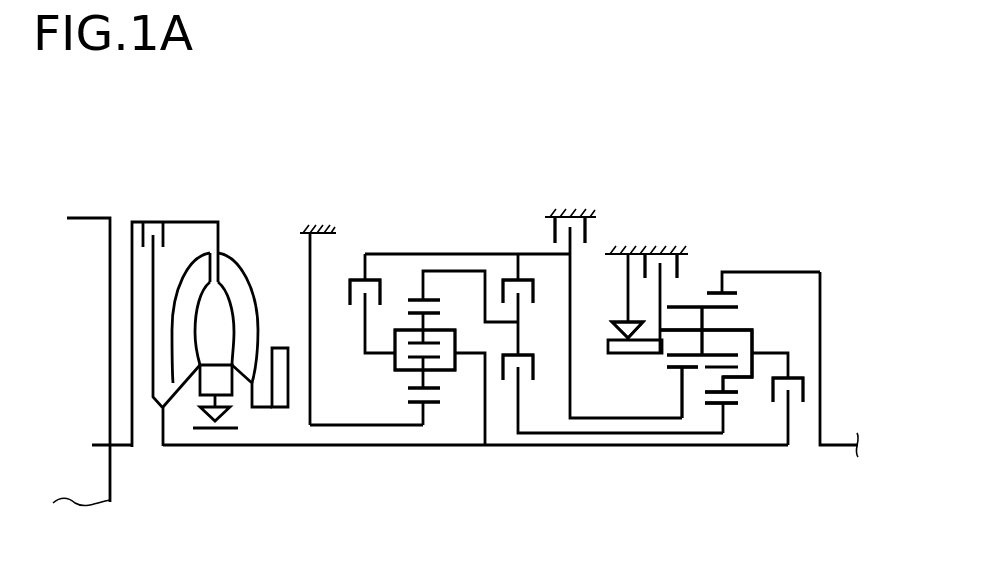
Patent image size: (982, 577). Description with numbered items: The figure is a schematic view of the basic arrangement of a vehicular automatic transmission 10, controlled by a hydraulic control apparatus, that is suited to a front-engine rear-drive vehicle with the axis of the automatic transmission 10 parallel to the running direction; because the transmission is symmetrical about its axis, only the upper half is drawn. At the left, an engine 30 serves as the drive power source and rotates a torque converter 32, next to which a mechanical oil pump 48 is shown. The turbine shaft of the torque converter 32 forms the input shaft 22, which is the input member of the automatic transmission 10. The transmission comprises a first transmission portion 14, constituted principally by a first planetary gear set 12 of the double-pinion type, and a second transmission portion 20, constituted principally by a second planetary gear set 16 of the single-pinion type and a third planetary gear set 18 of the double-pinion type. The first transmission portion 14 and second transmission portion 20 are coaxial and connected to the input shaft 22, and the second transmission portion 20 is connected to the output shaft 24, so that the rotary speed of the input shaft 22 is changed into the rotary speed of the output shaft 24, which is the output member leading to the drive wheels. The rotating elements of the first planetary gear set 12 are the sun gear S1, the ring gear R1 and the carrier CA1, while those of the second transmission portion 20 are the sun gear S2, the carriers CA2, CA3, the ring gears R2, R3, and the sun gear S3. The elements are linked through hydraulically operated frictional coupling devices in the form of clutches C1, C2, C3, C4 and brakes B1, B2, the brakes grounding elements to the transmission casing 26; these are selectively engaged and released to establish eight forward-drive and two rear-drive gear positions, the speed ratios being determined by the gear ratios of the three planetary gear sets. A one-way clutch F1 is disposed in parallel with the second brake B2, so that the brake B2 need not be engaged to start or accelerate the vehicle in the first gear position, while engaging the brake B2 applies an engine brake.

The automatic transmission 10 is at (771, 212).
The first planetary gear set 12 is at (432, 315).
The first transmission portion 14 is at (516, 350).
The second planetary gear set 16 is at (694, 301).
The third planetary gear set 18 is at (736, 328).
The second transmission portion 20 is at (709, 353).
The input shaft 22 is at (257, 448).
The output shaft 24 is at (836, 449).
The transmission casing 26 is at (311, 231).
The engine 30 is at (87, 232).
The torque converter 32 is at (229, 234).
The mechanical oil pump 48 is at (280, 346).
The clutch C1 is at (533, 374).
The clutch C2 is at (796, 378).
The clutch C3 is at (533, 286).
The clutch C4 is at (355, 280).
The brake B1 is at (570, 212).
The second brake B2 is at (661, 245).
The one-way clutch F1 is at (621, 315).
The ring gear R1 is at (438, 295).
The carrier CA1 is at (401, 353).
The sun gear S1 is at (436, 409).
The sun gear S2 is at (674, 382).
The sun gear S3 is at (729, 412).
The ring gear R3 is at (759, 293).
The carrier CA2 is at (736, 344).